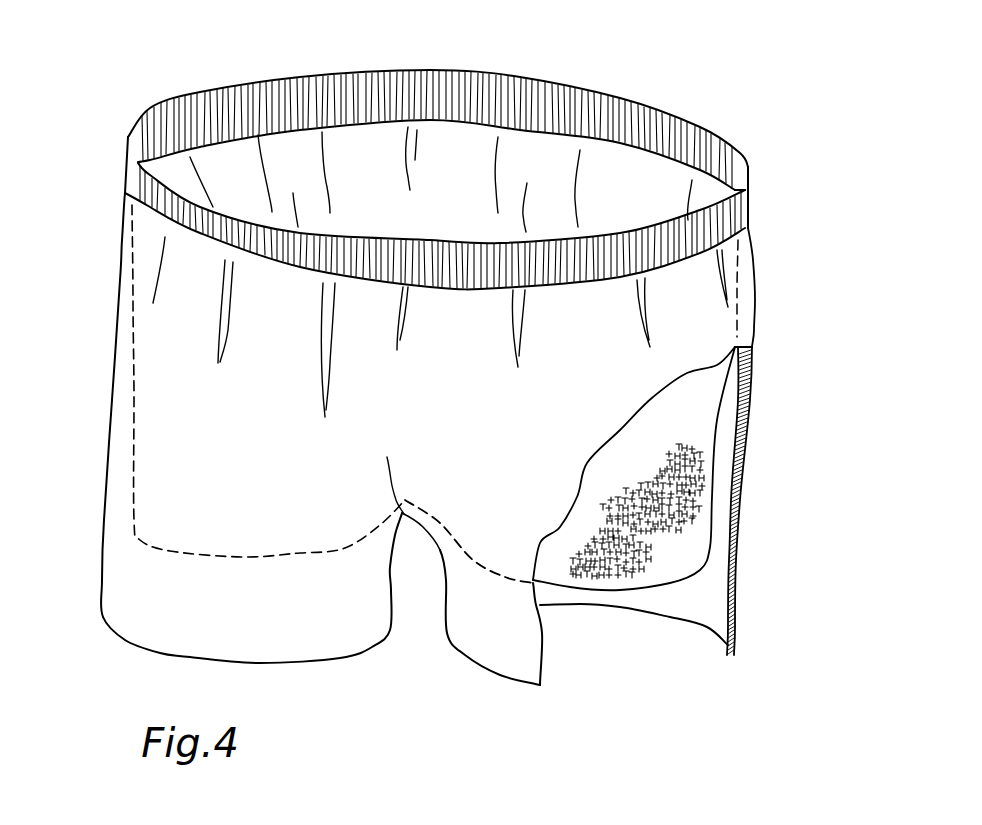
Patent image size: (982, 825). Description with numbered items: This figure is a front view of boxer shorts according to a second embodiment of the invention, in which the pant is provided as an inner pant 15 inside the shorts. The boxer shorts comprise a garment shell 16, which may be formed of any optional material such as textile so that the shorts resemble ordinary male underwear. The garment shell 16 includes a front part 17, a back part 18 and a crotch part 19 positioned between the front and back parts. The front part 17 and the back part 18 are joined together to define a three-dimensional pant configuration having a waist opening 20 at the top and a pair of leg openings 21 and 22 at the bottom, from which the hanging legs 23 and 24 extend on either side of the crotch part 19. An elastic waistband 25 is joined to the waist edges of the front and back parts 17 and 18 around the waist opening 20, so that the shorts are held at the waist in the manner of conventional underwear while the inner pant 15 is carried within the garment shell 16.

The inner pant 15 is at (693, 480).
The garment shell 16 is at (148, 329).
The front part 17 is at (175, 408).
The back part 18 is at (723, 512).
The crotch part 19 is at (412, 516).
The waist opening 20 is at (545, 77).
The leg opening 21 is at (185, 657).
The leg opening 22 is at (670, 632).
The hanging leg 23 is at (140, 573).
The hanging leg 24 is at (737, 587).
The elastic waistband 25 is at (623, 115).